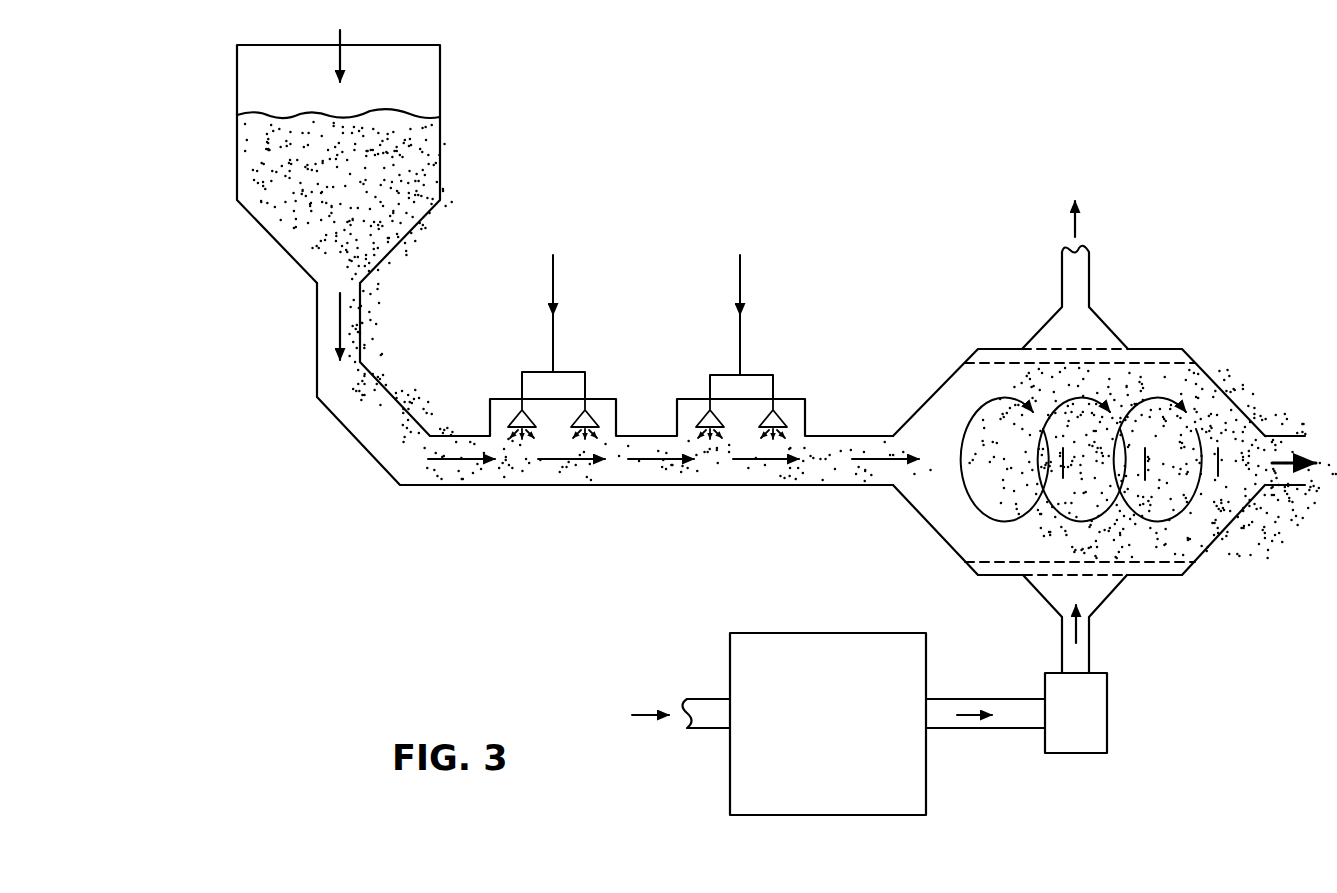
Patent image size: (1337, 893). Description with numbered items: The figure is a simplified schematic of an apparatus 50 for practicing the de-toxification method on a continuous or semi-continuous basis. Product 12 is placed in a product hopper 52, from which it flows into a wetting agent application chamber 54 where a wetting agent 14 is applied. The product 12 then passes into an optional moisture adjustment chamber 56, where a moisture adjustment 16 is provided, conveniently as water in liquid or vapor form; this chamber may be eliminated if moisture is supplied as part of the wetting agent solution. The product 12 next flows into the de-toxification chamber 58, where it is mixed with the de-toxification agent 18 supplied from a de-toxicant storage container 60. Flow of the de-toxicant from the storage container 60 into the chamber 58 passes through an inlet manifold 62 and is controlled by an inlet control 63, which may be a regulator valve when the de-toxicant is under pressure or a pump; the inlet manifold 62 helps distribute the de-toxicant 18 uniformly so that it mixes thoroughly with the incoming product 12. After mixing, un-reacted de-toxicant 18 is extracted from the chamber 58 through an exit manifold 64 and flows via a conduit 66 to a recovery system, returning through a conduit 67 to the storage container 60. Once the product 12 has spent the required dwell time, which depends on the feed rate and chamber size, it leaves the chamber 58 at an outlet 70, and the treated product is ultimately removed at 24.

The product 12 is at (338, 70).
The wetting agent 14 is at (553, 300).
The moisture adjustment 16 is at (740, 300).
The de-toxification agent 18 is at (1072, 210).
The product removal 24 is at (1293, 467).
The apparatus 50 is at (675, 184).
The product hopper 52 is at (441, 164).
The wetting agent application chamber 54 is at (512, 398).
The moisture adjustment chamber 56 is at (698, 398).
The de-toxification chamber 58 is at (1007, 348).
The de-toxicant storage container 60 is at (730, 763).
The inlet manifold 62 is at (1158, 570).
The inlet control 63 is at (1107, 728).
The exit manifold 64 is at (1147, 356).
The conduit 66 is at (1062, 296).
The conduit 67 is at (650, 720).
The outlet 70 is at (1292, 436).